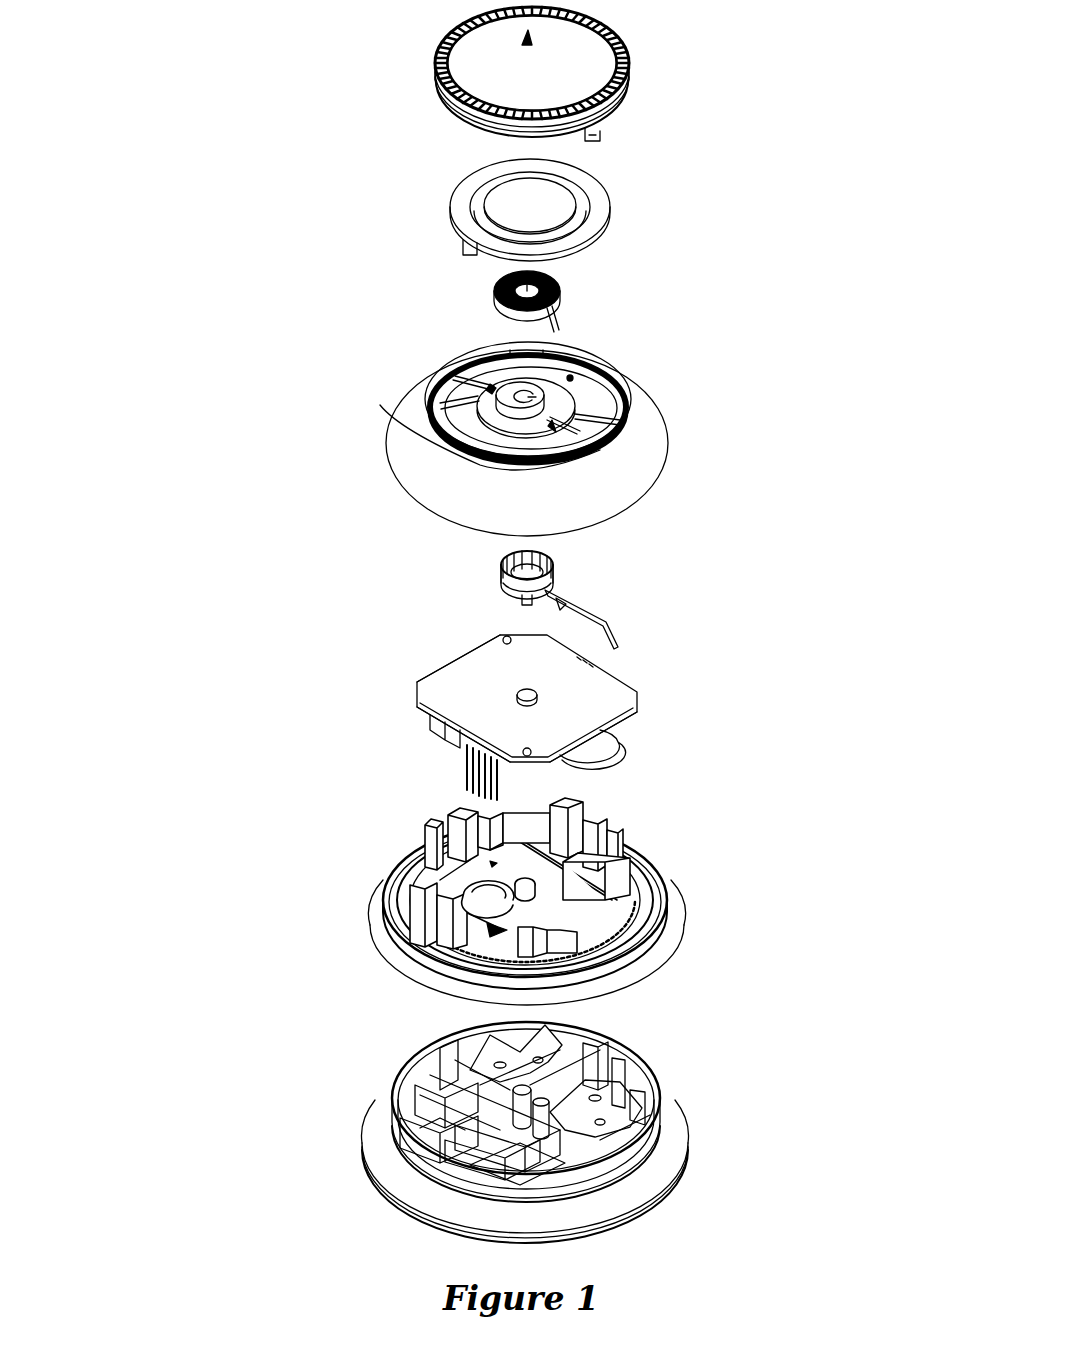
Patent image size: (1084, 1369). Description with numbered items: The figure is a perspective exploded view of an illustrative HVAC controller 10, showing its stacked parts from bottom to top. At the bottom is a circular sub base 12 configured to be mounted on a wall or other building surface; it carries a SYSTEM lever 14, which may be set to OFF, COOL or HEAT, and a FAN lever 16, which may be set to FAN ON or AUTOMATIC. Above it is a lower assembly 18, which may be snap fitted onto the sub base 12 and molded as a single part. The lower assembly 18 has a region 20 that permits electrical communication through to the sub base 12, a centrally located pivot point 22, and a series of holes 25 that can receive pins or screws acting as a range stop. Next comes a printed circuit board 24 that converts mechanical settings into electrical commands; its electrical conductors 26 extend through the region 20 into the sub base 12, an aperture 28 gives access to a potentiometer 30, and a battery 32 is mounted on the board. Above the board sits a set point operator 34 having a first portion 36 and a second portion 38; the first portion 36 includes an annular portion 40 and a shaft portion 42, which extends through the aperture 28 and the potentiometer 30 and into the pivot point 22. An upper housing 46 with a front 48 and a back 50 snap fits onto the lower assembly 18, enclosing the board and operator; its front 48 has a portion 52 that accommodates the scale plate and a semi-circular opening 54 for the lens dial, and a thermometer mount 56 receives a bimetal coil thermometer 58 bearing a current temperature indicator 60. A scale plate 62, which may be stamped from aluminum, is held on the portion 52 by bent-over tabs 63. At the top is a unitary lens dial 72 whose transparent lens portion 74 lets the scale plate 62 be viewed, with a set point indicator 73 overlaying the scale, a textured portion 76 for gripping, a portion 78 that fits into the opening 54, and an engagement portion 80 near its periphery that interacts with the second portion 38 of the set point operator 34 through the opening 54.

The controller 10 is at (262, 521).
The sub base 12 is at (569, 1126).
The SYSTEM lever 14 is at (480, 1047).
The FAN lever 16 is at (618, 1112).
The lower assembly 18 is at (553, 901).
The region 20 is at (430, 950).
The pivot point 22 is at (640, 950).
The printed circuit board 24 is at (529, 717).
The series of holes 25 is at (668, 905).
The electrical conductors 26 is at (463, 775).
The aperture 28 is at (537, 694).
The potentiometer 30 is at (540, 700).
The battery 32 is at (612, 752).
The set point operator 34 is at (496, 590).
The first portion 36 is at (558, 587).
The second portion 38 is at (613, 611).
The annular portion 40 is at (550, 562).
The shaft portion 42 is at (520, 603).
The upper housing 46 is at (672, 418).
The front 48 is at (542, 447).
The back 50 is at (648, 510).
The portion 52 is at (478, 436).
The opening 54 is at (455, 410).
The thermometer mount 56 is at (532, 392).
The thermometer 58 is at (494, 292).
The current temperature indicator 60 is at (557, 330).
The scale plate 62 is at (460, 206).
The tabs 63 is at (466, 248).
The lens dial 72 is at (546, 83).
The set point indicator 73 is at (520, 38).
The lens portion 74 is at (462, 65).
The textured portion 76 is at (626, 59).
The portion 78 is at (515, 138).
The engagement portion 80 is at (601, 130).